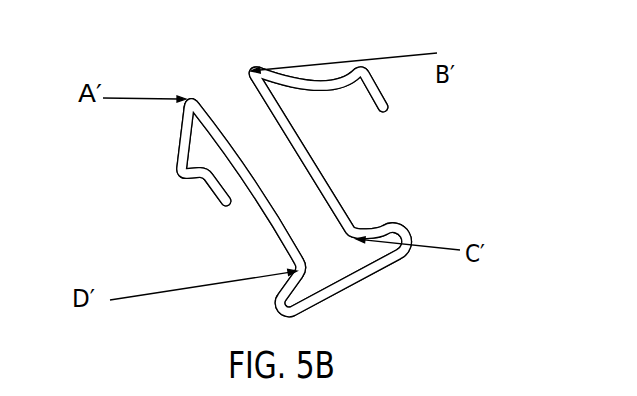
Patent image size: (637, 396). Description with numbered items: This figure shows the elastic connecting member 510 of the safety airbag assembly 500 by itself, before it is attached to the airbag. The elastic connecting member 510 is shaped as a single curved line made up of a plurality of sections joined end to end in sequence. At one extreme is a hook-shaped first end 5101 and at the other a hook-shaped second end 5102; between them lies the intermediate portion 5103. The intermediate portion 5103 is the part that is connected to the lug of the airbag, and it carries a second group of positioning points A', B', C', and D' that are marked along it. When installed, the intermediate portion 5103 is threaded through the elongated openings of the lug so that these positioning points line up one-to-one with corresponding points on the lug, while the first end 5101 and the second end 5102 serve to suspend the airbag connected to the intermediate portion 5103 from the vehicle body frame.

The safety airbag assembly 500 is at (373, 30).
The elastic connecting member 510 is at (328, 291).
The first end 5101 is at (206, 180).
The second end 5102 is at (389, 110).
The intermediate portion 5103 is at (282, 240).